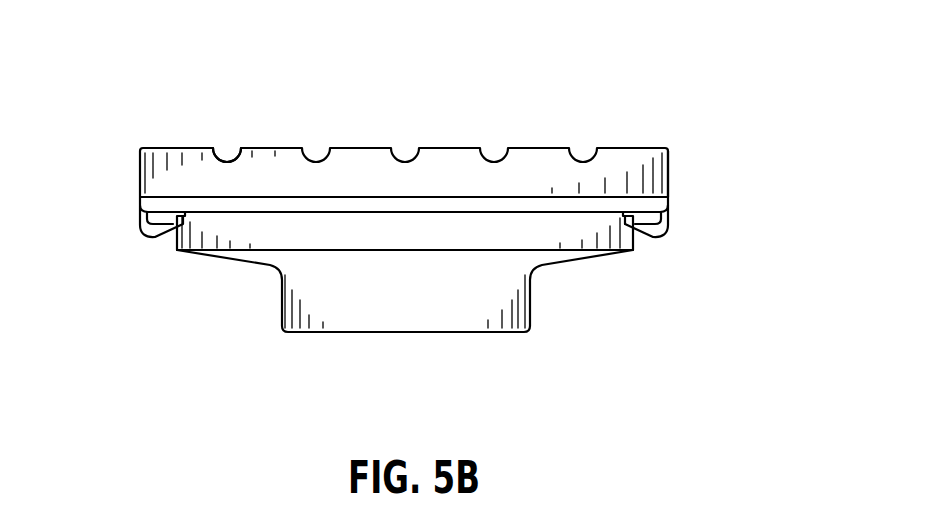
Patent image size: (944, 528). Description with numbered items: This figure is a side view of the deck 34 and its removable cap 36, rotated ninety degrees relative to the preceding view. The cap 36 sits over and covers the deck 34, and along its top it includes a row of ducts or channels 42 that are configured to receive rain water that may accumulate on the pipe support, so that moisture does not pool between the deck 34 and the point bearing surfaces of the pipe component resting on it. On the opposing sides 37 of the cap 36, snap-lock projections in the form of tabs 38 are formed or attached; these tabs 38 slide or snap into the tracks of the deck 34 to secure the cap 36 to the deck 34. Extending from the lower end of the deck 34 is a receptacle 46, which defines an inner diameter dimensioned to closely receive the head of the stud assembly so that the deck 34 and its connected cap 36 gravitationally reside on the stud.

The deck 34 is at (617, 252).
The removable cap 36 is at (642, 148).
The opposing sides 37 is at (672, 172).
The tabs 38 is at (155, 225).
The channels 42 is at (226, 160).
The receptacle 46 is at (492, 300).